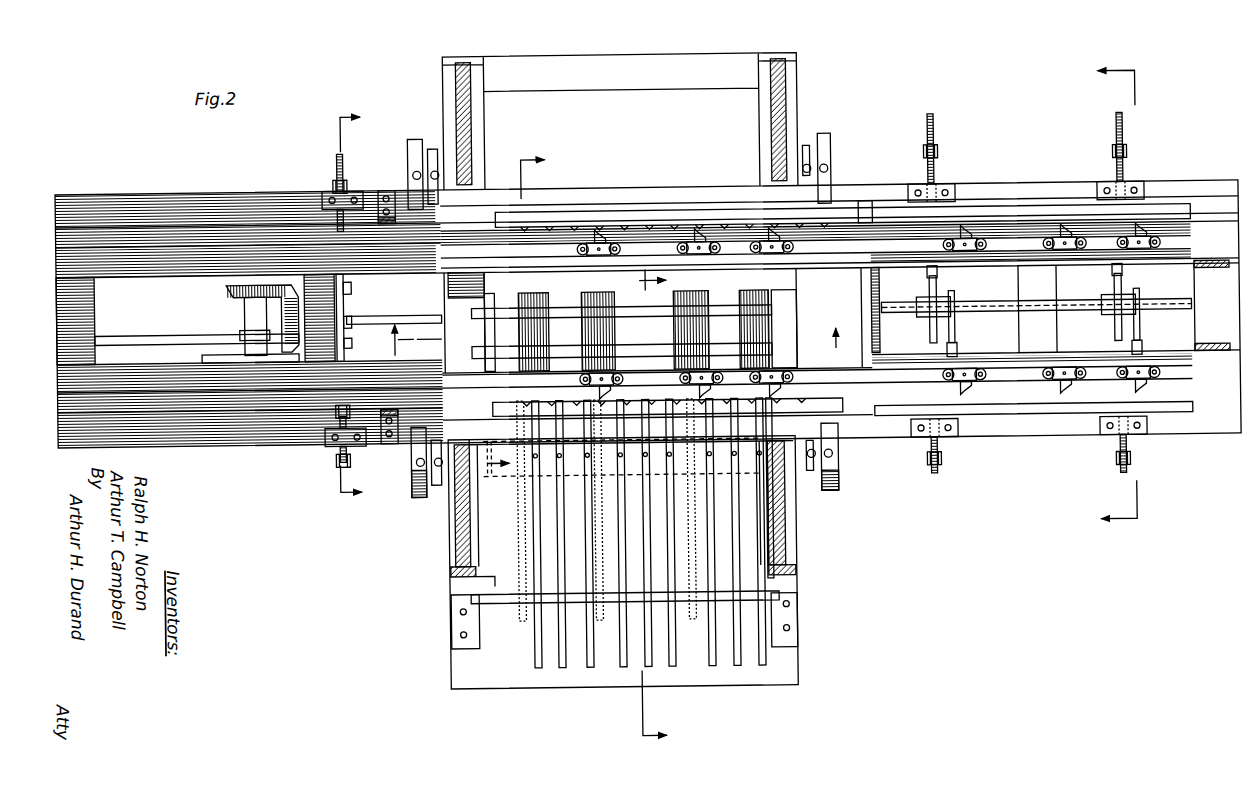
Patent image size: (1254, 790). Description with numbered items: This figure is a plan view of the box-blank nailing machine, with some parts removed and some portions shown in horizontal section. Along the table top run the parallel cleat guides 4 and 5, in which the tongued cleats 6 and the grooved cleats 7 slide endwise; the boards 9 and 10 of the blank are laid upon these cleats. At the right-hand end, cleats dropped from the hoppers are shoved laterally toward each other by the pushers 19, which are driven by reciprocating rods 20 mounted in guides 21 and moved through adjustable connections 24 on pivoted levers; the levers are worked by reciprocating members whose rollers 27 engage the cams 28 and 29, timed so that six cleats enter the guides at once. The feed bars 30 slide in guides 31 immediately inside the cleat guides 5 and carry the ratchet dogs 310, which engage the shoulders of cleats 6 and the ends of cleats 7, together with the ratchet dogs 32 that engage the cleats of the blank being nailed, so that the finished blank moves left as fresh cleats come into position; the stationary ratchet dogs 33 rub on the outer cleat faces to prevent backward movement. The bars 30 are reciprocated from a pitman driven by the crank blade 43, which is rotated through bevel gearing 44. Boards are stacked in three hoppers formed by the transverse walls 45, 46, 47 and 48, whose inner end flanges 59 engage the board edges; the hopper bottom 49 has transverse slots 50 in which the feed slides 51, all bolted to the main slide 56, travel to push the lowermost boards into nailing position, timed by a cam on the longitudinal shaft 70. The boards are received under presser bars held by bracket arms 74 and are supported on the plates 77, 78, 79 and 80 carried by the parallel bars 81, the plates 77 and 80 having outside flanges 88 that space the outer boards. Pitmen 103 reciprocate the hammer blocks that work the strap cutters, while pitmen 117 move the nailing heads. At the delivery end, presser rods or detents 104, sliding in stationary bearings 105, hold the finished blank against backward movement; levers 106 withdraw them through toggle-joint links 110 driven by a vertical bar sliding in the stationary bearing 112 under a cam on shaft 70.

The cleat guide 4 is at (1185, 232).
The cleat guide 5 is at (1215, 485).
The cleat 6 is at (350, 307).
The cleat 7 is at (515, 313).
The sheet or board 9 is at (639, 504).
The sheet or board 10 is at (1130, 74).
The pusher 19 is at (985, 228).
The reciprocating rod 20 is at (938, 178).
The guide 21 is at (915, 197).
The adjustable connection 24 is at (936, 160).
The roller 27 is at (940, 283).
The cam 28 is at (955, 300).
The cam 29 is at (925, 300).
The feed bar 30 is at (1010, 250).
The guide 31 is at (1195, 281).
The ratchet dog 32 is at (775, 244).
The stationary ratchet dog 33 is at (604, 234).
The crank blade 43 is at (225, 358).
The bevel gearing 44 is at (240, 300).
The wall or partition 45 is at (517, 630).
The wall or partition 46 is at (595, 630).
The wall or partition 47 is at (688, 630).
The wall or partition 48 is at (790, 600).
The table or bottom 49 is at (445, 602).
The slot 50 is at (556, 678).
The feed slide 51 is at (495, 414).
The main slide 56 is at (450, 530).
The inner end flange 59 is at (560, 470).
The shaft 70 is at (413, 320).
The bracket arm 74 is at (380, 205).
The plate 77 is at (540, 300).
The plate 78 is at (590, 300).
The plate 79 is at (685, 300).
The plate 80 is at (745, 300).
The parallel bar 81 is at (512, 318).
The outside flange 88 is at (528, 312).
The pitman 103 is at (412, 178).
The presser rod or detent 104 is at (334, 175).
The stationary bearing 105 is at (326, 200).
The lever 106 is at (338, 470).
The toggle-joint link 110 is at (352, 292).
The stationary bearing 112 is at (350, 340).
The pitman 117 is at (432, 160).
The ratchet dog 310 is at (966, 240).